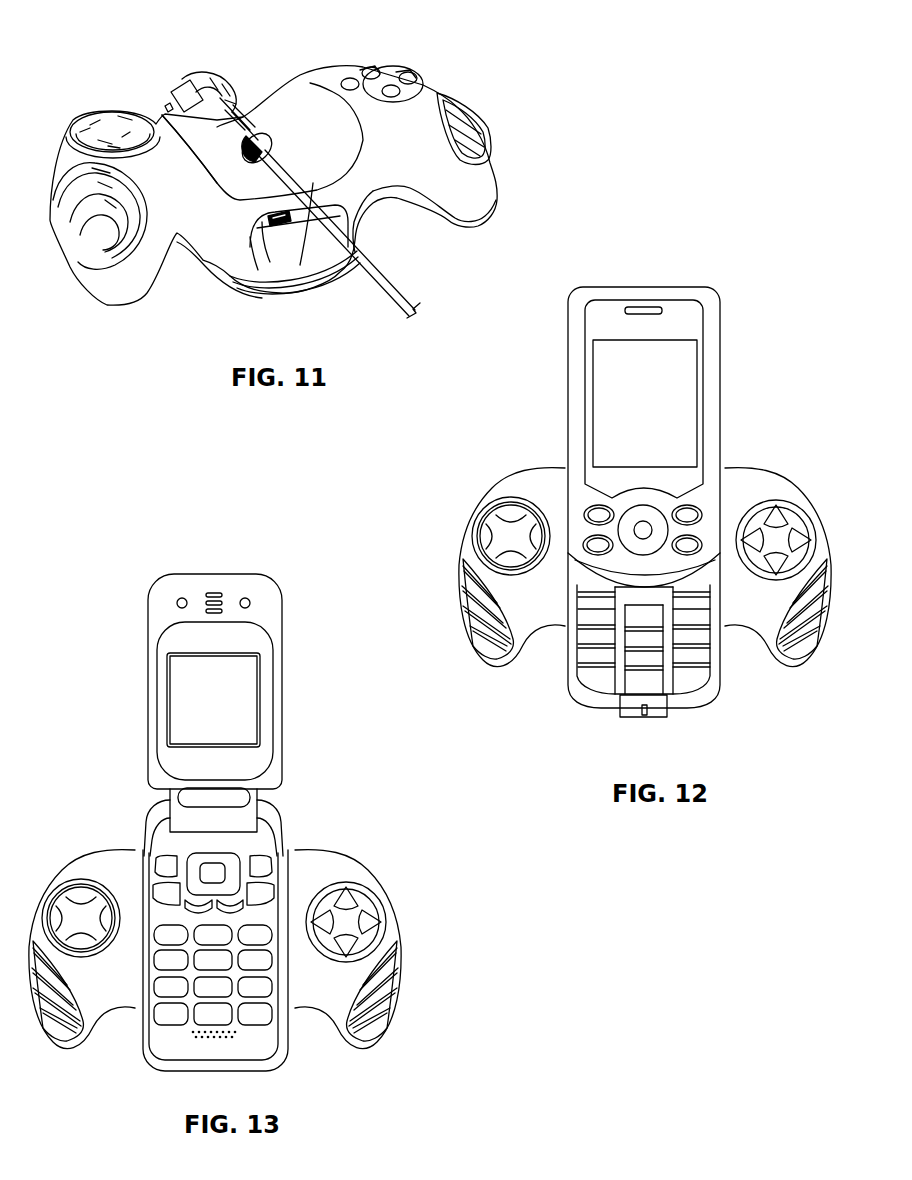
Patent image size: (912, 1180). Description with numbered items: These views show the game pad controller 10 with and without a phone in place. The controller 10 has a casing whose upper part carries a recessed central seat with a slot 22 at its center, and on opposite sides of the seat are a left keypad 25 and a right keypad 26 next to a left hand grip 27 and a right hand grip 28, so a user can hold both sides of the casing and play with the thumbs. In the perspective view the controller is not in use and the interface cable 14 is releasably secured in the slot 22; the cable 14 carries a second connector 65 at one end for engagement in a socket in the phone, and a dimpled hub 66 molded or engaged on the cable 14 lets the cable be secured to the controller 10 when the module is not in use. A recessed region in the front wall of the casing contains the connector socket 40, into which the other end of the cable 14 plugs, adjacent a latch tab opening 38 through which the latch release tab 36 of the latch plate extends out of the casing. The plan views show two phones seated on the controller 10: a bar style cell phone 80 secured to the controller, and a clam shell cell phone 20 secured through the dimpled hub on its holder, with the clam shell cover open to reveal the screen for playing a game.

In FIG. 11, the game pad controller 10 is at (360, 188).
In FIG. 12, the game pad controller 10 is at (772, 476).
In FIG. 13, the game pad controller 10 is at (332, 854).
In FIG. 11, the interface cable 14 is at (287, 186).
In FIG. 12, the cell phone 20 is at (722, 359).
In FIG. 11, the slot 22 is at (212, 185).
In FIG. 11, the left keypad 25 is at (117, 130).
In FIG. 11, the right keypad 26 is at (382, 73).
In FIG. 11, the left hand grip 27 is at (73, 257).
In FIG. 11, the right hand grip 28 is at (470, 132).
In FIG. 11, the latch release tab 36 is at (327, 205).
In FIG. 11, the latch tab opening 38 is at (300, 273).
In FIG. 11, the connector socket 40 is at (268, 224).
In FIG. 11, the second connector 65 is at (163, 110).
In FIG. 11, the dimpled hub 66 is at (260, 137).
In FIG. 13, the bar style cell phone 80 is at (253, 573).